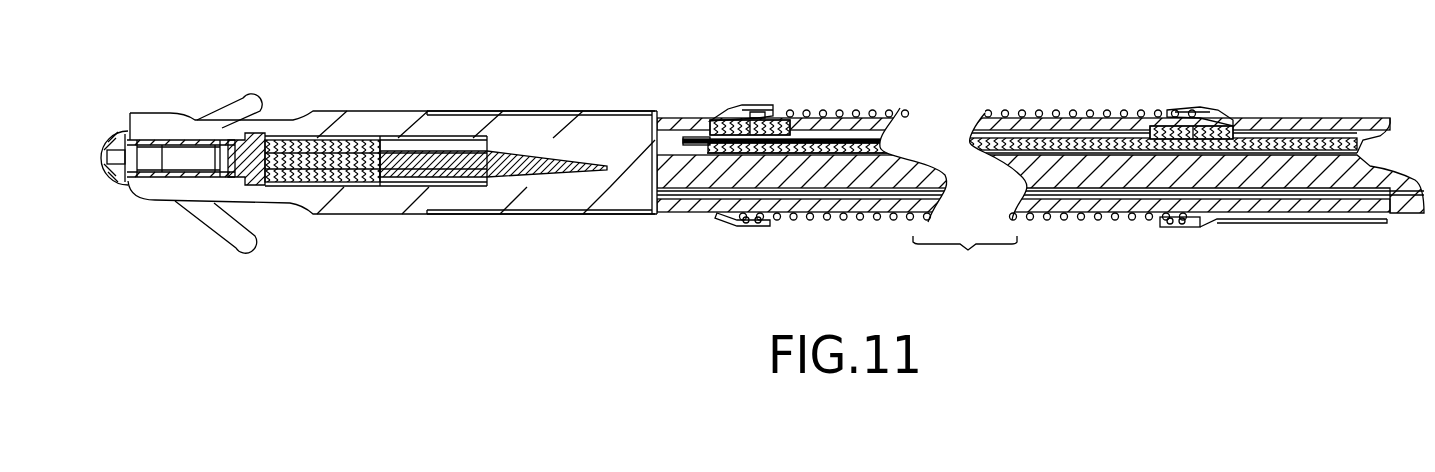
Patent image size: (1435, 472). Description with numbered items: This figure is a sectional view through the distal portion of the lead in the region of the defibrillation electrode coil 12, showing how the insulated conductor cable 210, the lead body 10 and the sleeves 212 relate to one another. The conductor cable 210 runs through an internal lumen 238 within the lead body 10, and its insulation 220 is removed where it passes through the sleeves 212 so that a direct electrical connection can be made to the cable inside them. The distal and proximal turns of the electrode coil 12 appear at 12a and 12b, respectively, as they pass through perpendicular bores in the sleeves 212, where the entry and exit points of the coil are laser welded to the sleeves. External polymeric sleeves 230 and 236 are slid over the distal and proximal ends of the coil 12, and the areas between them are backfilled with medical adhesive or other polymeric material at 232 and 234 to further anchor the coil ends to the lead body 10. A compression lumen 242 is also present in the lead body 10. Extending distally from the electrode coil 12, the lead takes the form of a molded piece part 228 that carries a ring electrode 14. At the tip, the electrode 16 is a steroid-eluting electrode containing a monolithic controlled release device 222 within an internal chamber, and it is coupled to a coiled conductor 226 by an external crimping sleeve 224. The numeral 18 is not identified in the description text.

The lead body 10 is at (1403, 213).
The electrode coil 12 is at (1027, 222).
The distal turn of electrode coil 12a is at (780, 118).
The proximal turn of electrode coil 12b is at (1195, 128).
The ring electrode 14 is at (495, 215).
The electrode 16 is at (113, 184).
The lever arms 18 is at (237, 102).
The insulated conductor cable 210 is at (1032, 126).
The sleeves 212 is at (722, 124).
The insulation 220 is at (1108, 138).
The monolithic controlled release device 222 is at (162, 158).
The external crimping sleeve 224 is at (375, 137).
The coiled conductor 226 is at (527, 153).
The molded piece part 228 is at (373, 207).
The external polymeric sleeve 230 is at (593, 217).
The backfill 232 is at (753, 226).
The backfill 234 is at (1175, 227).
The external polymeric sleeve 236 is at (1232, 219).
The internal lumen 238 is at (1323, 140).
The compression lumen 242 is at (908, 200).